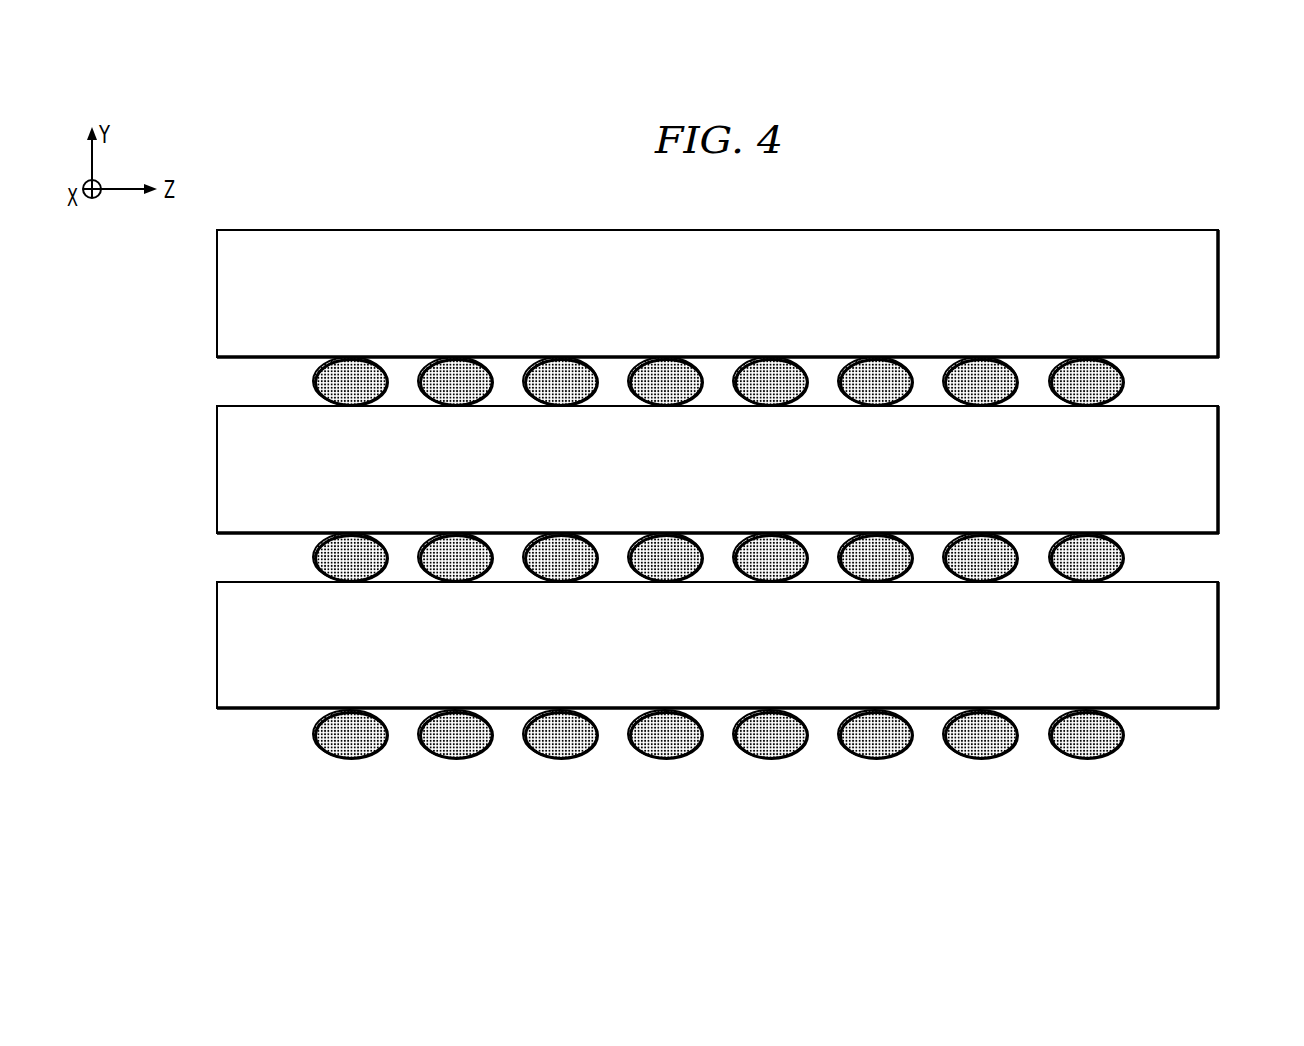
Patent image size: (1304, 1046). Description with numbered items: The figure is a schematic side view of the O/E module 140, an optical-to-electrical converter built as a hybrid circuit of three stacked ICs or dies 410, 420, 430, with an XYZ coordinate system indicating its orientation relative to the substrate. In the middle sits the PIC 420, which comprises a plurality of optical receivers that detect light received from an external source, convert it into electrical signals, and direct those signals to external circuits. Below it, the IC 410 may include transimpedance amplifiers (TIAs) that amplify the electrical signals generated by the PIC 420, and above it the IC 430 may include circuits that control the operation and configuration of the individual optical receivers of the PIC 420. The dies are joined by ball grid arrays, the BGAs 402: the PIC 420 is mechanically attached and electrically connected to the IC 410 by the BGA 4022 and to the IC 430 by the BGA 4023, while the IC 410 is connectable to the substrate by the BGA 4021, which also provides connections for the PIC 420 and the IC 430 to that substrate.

The O/E module 140 is at (734, 196).
The IC 410 is at (1218, 645).
The PIC 420 is at (1218, 471).
The IC 430 is at (1218, 295).
The BGAs 402 is at (633, 557).
The BGA 4021 is at (268, 729).
The BGA 4022 is at (268, 553).
The BGA 4023 is at (268, 378).